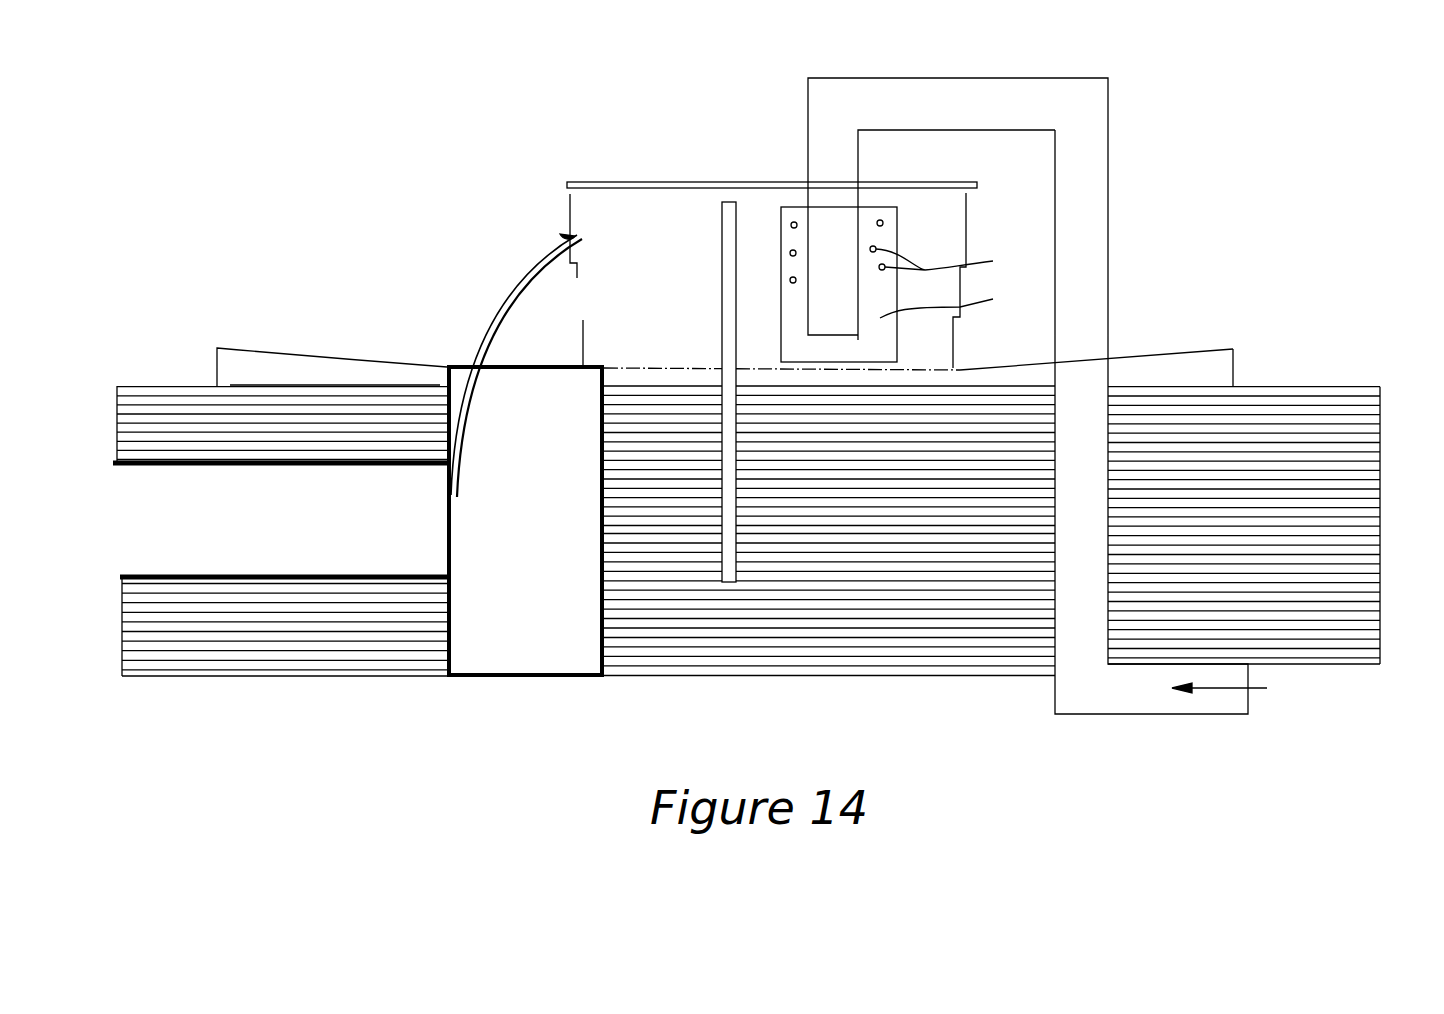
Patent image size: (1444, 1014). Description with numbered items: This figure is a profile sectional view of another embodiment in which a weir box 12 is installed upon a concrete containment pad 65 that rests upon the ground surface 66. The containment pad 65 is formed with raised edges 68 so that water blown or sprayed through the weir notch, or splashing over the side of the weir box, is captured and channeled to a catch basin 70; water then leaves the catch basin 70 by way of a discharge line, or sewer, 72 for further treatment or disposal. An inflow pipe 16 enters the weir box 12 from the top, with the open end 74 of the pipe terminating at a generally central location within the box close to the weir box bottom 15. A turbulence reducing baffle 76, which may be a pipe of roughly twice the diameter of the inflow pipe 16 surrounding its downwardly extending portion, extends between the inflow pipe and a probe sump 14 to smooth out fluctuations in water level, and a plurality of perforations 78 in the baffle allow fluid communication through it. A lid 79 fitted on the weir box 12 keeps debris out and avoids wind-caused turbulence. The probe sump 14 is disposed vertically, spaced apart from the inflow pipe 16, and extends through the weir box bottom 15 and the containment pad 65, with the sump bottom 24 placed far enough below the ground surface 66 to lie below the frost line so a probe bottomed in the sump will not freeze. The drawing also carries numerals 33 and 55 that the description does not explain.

The weir box 12 is at (928, 242).
The probe sump 14 is at (728, 300).
The weir box bottom 15 is at (665, 366).
The inflow pipe 16 is at (1018, 36).
The sump bottom 24 is at (730, 590).
The valve 33 is at (565, 237).
The hose 55 is at (540, 250).
The concrete containment pad 65 is at (345, 373).
The ground surface 66 is at (1325, 387).
The raised edges 68 is at (217, 350).
The catch basin 70 is at (515, 400).
The discharge line 72 is at (191, 505).
The open end 74 is at (856, 336).
The turbulence reducing baffle 76 is at (957, 301).
The perforations 78 is at (955, 260).
The lid 79 is at (770, 186).